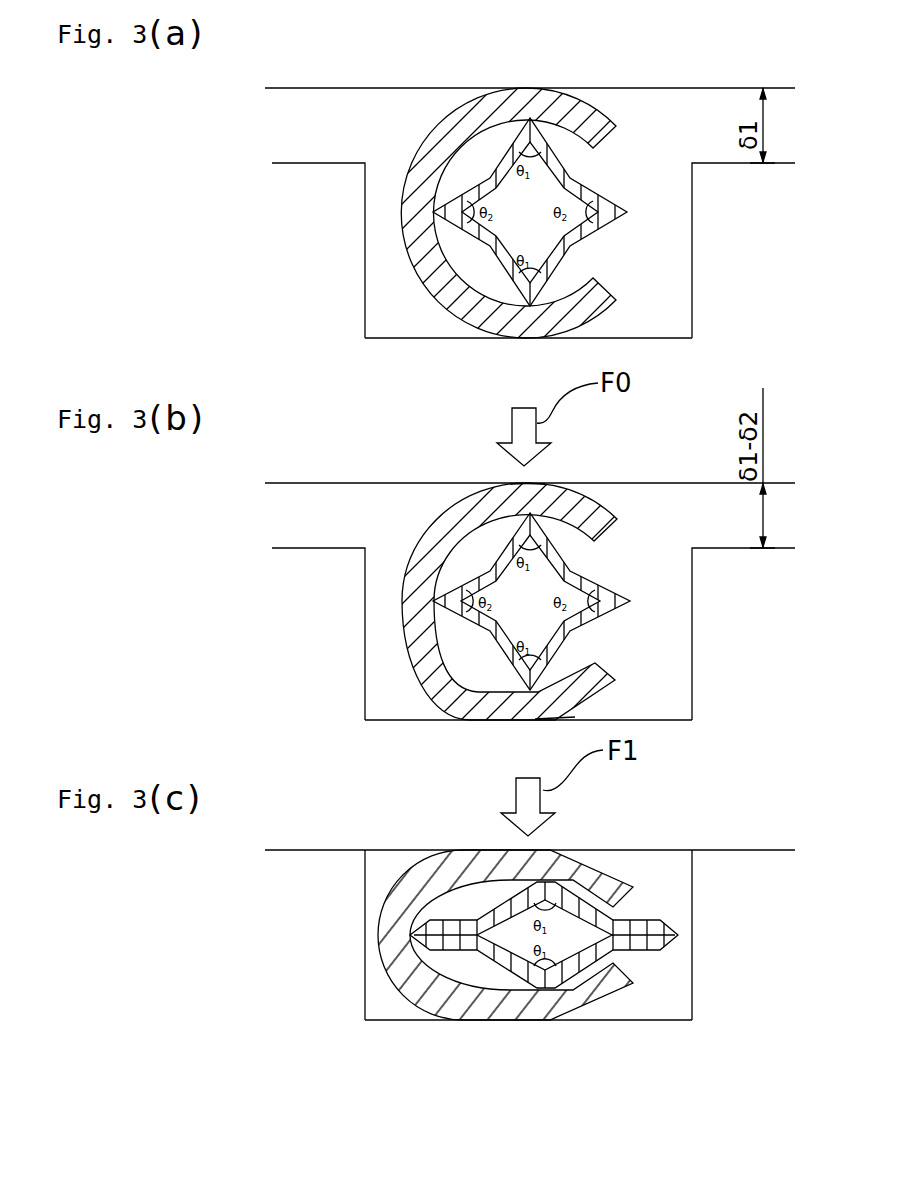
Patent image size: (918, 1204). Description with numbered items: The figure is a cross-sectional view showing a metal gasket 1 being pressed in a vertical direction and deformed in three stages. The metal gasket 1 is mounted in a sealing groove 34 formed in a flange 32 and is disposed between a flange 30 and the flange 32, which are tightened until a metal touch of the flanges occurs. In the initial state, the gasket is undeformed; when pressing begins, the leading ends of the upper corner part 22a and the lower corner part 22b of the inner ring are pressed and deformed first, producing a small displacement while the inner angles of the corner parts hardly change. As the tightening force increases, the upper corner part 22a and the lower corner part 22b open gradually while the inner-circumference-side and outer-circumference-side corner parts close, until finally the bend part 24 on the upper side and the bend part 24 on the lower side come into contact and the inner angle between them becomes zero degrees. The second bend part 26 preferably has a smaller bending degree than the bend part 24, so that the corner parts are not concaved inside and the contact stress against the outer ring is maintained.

In FIG. 3A, the metal gasket 1 is at (455, 246).
In FIG. 3B, the metal gasket 1 is at (487, 606).
In FIG. 3C, the metal gasket 1 is at (480, 961).
In FIG. 3A, the bend part 24 is at (455, 168).
In FIG. 3B, the bend part 24 is at (455, 560).
In FIG. 3C, the bend part 24 is at (467, 900).
In FIG. 3A, the second bend part 26 is at (485, 320).
In FIG. 3B, the second bend part 26 is at (483, 703).
In FIG. 3C, the second bend part 26 is at (520, 983).
In FIG. 3A, the flange 30 is at (440, 90).
In FIG. 3B, the flange 30 is at (435, 485).
In FIG. 3C, the flange 30 is at (415, 852).
In FIG. 3A, the flange 32 is at (332, 163).
In FIG. 3B, the flange 32 is at (332, 548).
In FIG. 3C, the flange 32 is at (325, 850).
In FIG. 3A, the sealing groove 34 is at (442, 338).
In FIG. 3B, the sealing groove 34 is at (440, 720).
In FIG. 3C, the sealing groove 34 is at (410, 1020).
In FIG. 3B, the upper corner part 22a is at (532, 494).
In FIG. 3B, the lower corner part 22b is at (560, 688).